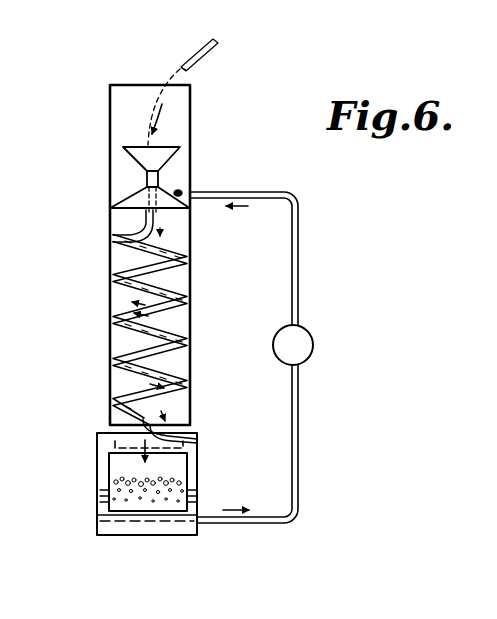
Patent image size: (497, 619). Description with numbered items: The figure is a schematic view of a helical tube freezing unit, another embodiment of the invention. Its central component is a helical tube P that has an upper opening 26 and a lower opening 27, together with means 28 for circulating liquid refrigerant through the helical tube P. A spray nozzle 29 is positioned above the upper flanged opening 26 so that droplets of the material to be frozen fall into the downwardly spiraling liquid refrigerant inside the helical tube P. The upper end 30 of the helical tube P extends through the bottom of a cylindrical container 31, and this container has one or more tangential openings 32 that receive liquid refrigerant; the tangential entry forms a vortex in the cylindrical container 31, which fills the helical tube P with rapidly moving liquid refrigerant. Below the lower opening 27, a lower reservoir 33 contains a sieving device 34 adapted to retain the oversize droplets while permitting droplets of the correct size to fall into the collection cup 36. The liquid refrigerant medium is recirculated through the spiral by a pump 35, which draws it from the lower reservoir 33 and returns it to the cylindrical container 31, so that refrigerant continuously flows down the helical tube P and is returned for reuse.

The upper opening 26 is at (165, 147).
The lower opening 27 is at (197, 441).
The means for circulating liquid refrigerant 28 is at (298, 411).
The spray nozzle 29 is at (205, 45).
The upper end 30 is at (150, 179).
The cylindrical container 31 is at (104, 107).
The tangential opening 32 is at (181, 192).
The lower reservoir 33 is at (190, 474).
The sieving device 34 is at (113, 445).
The pump 35 is at (313, 345).
The collection cup 36 is at (118, 472).
The helical tube P is at (166, 296).